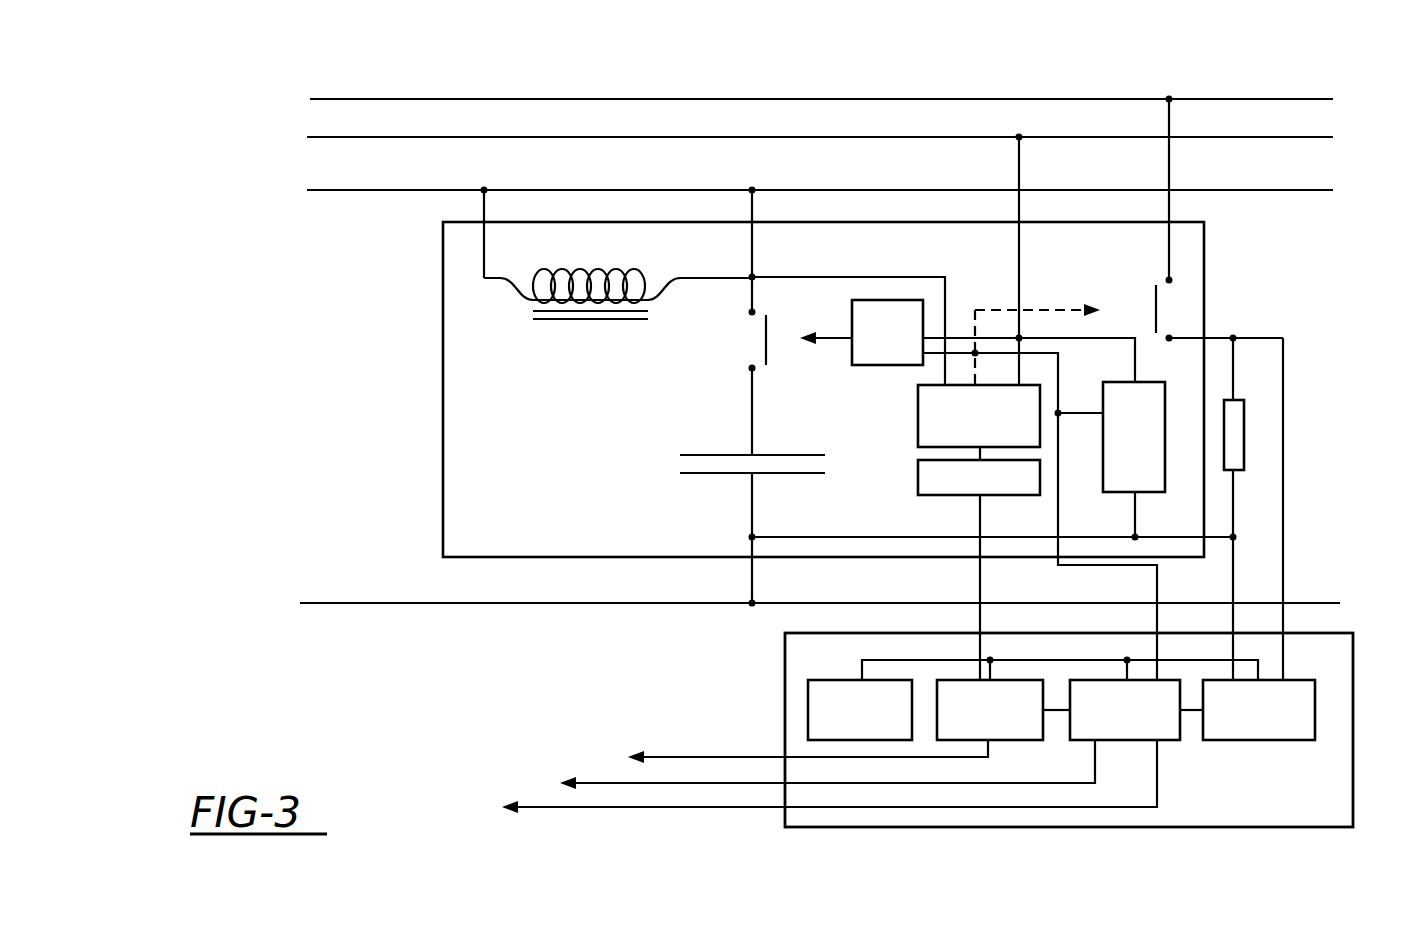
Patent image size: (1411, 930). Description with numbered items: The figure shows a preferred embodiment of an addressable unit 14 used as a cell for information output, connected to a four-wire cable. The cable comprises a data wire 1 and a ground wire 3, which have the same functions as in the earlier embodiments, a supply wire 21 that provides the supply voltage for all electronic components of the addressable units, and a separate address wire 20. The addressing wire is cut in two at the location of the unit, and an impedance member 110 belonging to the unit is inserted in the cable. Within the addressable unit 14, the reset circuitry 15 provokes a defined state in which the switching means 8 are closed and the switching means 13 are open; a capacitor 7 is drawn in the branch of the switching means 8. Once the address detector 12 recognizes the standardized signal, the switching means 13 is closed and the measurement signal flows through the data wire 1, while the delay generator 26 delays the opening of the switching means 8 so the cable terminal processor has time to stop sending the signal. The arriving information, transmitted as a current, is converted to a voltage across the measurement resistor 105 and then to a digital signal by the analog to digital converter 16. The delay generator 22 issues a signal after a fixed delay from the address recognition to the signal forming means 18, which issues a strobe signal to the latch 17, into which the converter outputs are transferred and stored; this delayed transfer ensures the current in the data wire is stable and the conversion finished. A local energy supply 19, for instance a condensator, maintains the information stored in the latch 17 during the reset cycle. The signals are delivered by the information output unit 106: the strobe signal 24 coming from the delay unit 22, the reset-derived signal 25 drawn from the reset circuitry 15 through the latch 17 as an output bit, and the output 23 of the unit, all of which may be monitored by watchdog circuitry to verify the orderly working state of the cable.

The data wire 1 is at (1097, 88).
The supply wire 21 is at (1229, 122).
The address wire 20 is at (1273, 176).
The ground wire 3 is at (326, 592).
The addressable unit 14 is at (432, 355).
The impedance member 110 is at (576, 328).
The switching means 8 is at (740, 340).
The capacitor 7 is at (711, 442).
The delay generator 26 is at (908, 353).
The address detector 12 is at (1000, 431).
The delay generator 22 is at (1000, 493).
The reset circuitry 15 is at (1155, 452).
The switching means 13 is at (1180, 308).
The measurement resistor 105 is at (1265, 390).
The information output unit 106 is at (772, 643).
The local energy supply 19 is at (880, 725).
The signal forming means 18 is at (1010, 725).
The latch circuit 17 is at (1145, 725).
The analog to digital converter 16 is at (1279, 725).
The strobe signal 24 is at (708, 744).
The output 23 is at (615, 768).
The output bit 25 is at (552, 792).